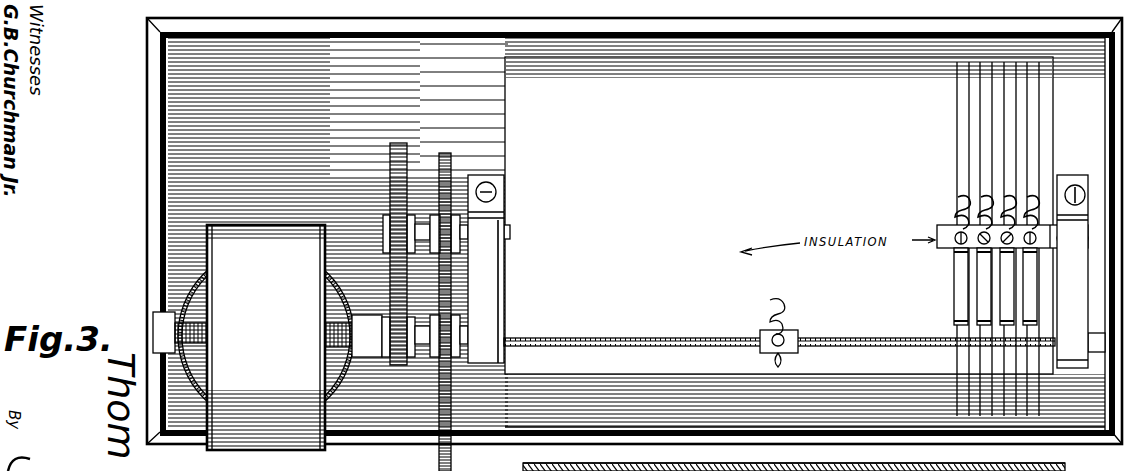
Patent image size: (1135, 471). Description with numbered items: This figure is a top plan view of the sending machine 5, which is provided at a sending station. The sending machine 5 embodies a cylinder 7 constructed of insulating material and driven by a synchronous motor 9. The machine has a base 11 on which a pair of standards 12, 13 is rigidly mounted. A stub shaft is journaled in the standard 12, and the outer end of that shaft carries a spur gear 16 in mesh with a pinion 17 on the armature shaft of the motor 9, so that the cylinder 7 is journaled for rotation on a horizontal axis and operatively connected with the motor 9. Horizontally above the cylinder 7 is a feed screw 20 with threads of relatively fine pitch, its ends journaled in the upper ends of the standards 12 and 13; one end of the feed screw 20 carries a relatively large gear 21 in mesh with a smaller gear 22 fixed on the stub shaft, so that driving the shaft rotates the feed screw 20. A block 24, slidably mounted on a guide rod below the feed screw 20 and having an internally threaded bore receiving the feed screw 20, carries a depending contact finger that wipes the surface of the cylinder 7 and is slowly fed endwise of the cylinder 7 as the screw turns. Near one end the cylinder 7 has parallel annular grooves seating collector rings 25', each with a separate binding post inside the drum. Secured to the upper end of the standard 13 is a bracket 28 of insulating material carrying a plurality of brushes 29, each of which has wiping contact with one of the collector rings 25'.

The sending machine 5 is at (433, 42).
The cylinder 7 is at (779, 215).
The synchronous motor 9 is at (266, 337).
The base 11 is at (1079, 217).
The standard 12 is at (486, 269).
The standard 13 is at (1072, 271).
The spur gear 16 is at (392, 288).
The pinion 17 is at (356, 372).
The feed screw 20 is at (630, 339).
The gear 21 is at (439, 464).
The gear 22 is at (452, 158).
The block 24 is at (800, 332).
The collector rings 25' is at (1013, 266).
The bracket 28 is at (937, 250).
The brushes 29 is at (957, 295).